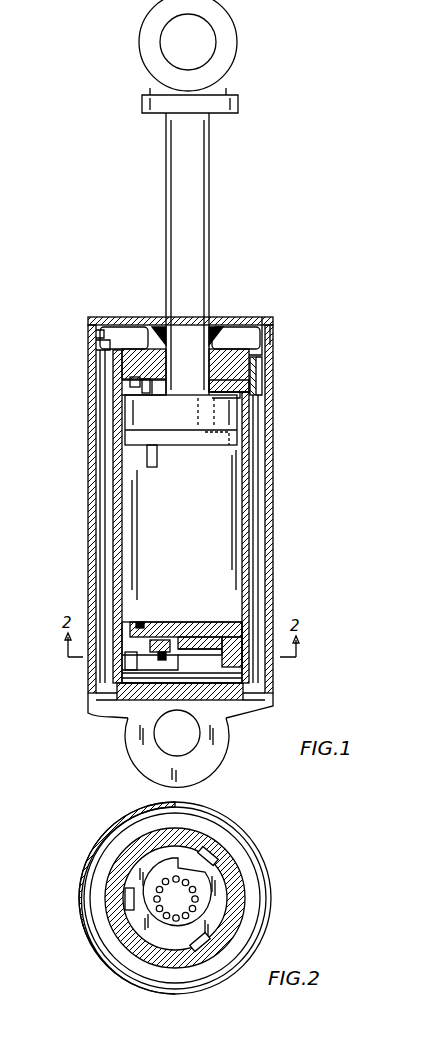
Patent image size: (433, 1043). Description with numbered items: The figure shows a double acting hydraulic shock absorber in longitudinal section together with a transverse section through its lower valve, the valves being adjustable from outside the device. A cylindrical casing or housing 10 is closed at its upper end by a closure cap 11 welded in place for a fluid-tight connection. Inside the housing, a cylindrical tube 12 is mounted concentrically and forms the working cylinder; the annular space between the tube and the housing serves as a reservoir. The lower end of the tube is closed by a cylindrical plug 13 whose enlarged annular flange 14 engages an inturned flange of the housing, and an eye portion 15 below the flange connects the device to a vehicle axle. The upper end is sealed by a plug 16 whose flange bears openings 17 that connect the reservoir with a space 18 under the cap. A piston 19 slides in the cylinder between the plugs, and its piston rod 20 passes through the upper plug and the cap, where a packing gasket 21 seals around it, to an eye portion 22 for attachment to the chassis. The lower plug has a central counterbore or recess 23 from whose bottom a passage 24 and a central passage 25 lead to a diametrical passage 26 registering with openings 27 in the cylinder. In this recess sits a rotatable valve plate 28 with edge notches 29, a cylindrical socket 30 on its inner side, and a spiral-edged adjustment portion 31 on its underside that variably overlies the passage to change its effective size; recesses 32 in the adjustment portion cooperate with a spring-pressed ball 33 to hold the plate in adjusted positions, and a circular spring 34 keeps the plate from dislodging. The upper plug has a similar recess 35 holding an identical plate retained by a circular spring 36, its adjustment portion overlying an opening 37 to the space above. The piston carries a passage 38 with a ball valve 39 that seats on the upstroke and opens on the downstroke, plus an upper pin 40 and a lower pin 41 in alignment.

In FIG. 1, the cylindrical casing or housing 10 is at (272, 552).
In FIG. 2, the cylindrical casing or housing 10 is at (262, 878).
In FIG. 1, the closure cap 11 is at (236, 352).
In FIG. 1, the cylindrical tube 12 is at (250, 490).
In FIG. 2, the cylindrical tube 12 is at (215, 850).
In FIG. 1, the cylindrical plug 13 is at (260, 625).
In FIG. 2, the cylindrical plug 13 is at (230, 870).
In FIG. 1, the annular flange 14 is at (272, 705).
In FIG. 1, the eye portion 15 is at (165, 742).
In FIG. 1, the plug 16 is at (252, 380).
In FIG. 1, the circumferentially spaced openings 17 is at (100, 352).
In FIG. 1, the space 18 is at (118, 330).
In FIG. 1, the piston 19 is at (205, 446).
In FIG. 1, the piston rod 20 is at (206, 207).
In FIG. 1, the packing gasket 21 is at (232, 335).
In FIG. 1, the eye portion 22 is at (232, 30).
In FIG. 1, the counterbore or recess 23 is at (212, 640).
In FIG. 1, the passage 24 is at (128, 662).
In FIG. 1, the passage 25 is at (145, 690).
In FIG. 1, the diametrical passage 26 is at (118, 695).
In FIG. 1, the openings 27 is at (125, 685).
In FIG. 1, the valve plate 28 is at (247, 384).
In FIG. 2, the valve plate 28 is at (232, 900).
In FIG. 1, the circumferentially spaced recesses or notches 29 is at (135, 378).
In FIG. 2, the circumferentially spaced recesses or notches 29 is at (218, 862).
In FIG. 1, the socket 30 is at (145, 385).
In FIG. 1, the adjustment portion 31 is at (270, 322).
In FIG. 2, the adjustment portion 31 is at (205, 935).
In FIG. 2, the recesses 32 is at (214, 920).
In FIG. 1, the spring-pressed ball 33 is at (188, 630).
In FIG. 1, the circular spring 34 is at (140, 623).
In FIG. 1, the recess or counterbore 35 is at (256, 373).
In FIG. 1, the circular spring 36 is at (249, 396).
In FIG. 1, the opening or passage 37 is at (92, 343).
In FIG. 1, the passage 38 is at (215, 455).
In FIG. 1, the ball valve 39 is at (193, 413).
In FIG. 1, the pin 40 is at (155, 400).
In FIG. 1, the pin 41 is at (150, 455).